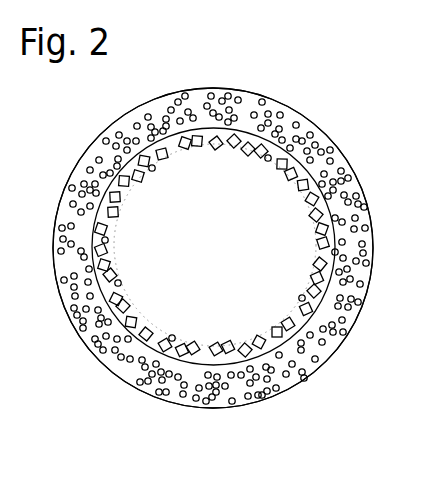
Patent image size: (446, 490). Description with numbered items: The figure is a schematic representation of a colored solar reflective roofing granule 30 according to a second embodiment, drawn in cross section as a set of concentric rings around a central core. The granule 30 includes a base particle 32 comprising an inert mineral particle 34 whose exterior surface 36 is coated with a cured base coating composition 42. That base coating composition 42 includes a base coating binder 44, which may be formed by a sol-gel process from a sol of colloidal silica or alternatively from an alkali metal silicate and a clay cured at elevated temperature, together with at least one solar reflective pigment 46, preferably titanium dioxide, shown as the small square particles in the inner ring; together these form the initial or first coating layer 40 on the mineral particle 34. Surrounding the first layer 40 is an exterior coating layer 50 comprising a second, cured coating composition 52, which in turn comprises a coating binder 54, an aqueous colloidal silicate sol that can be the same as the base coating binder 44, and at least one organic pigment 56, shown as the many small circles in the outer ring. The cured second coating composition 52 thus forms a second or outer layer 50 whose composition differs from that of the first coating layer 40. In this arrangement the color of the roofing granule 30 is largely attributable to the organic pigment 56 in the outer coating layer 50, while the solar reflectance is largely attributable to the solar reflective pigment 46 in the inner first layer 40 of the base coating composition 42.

The colored roofing granule 30 is at (84, 119).
The base particle 32 is at (273, 270).
The mineral particle 34 is at (221, 248).
The exterior surface 36 is at (227, 132).
The first coating layer 40 is at (270, 150).
The cured base coating composition 42 is at (289, 153).
The base coating binder 44 is at (315, 178).
The solar reflective pigment 46 is at (375, 226).
The exterior coating layer 50 is at (102, 340).
The second cured coating composition 52 is at (118, 377).
The coating binder 54 is at (157, 377).
The organic pigment 56 is at (255, 424).